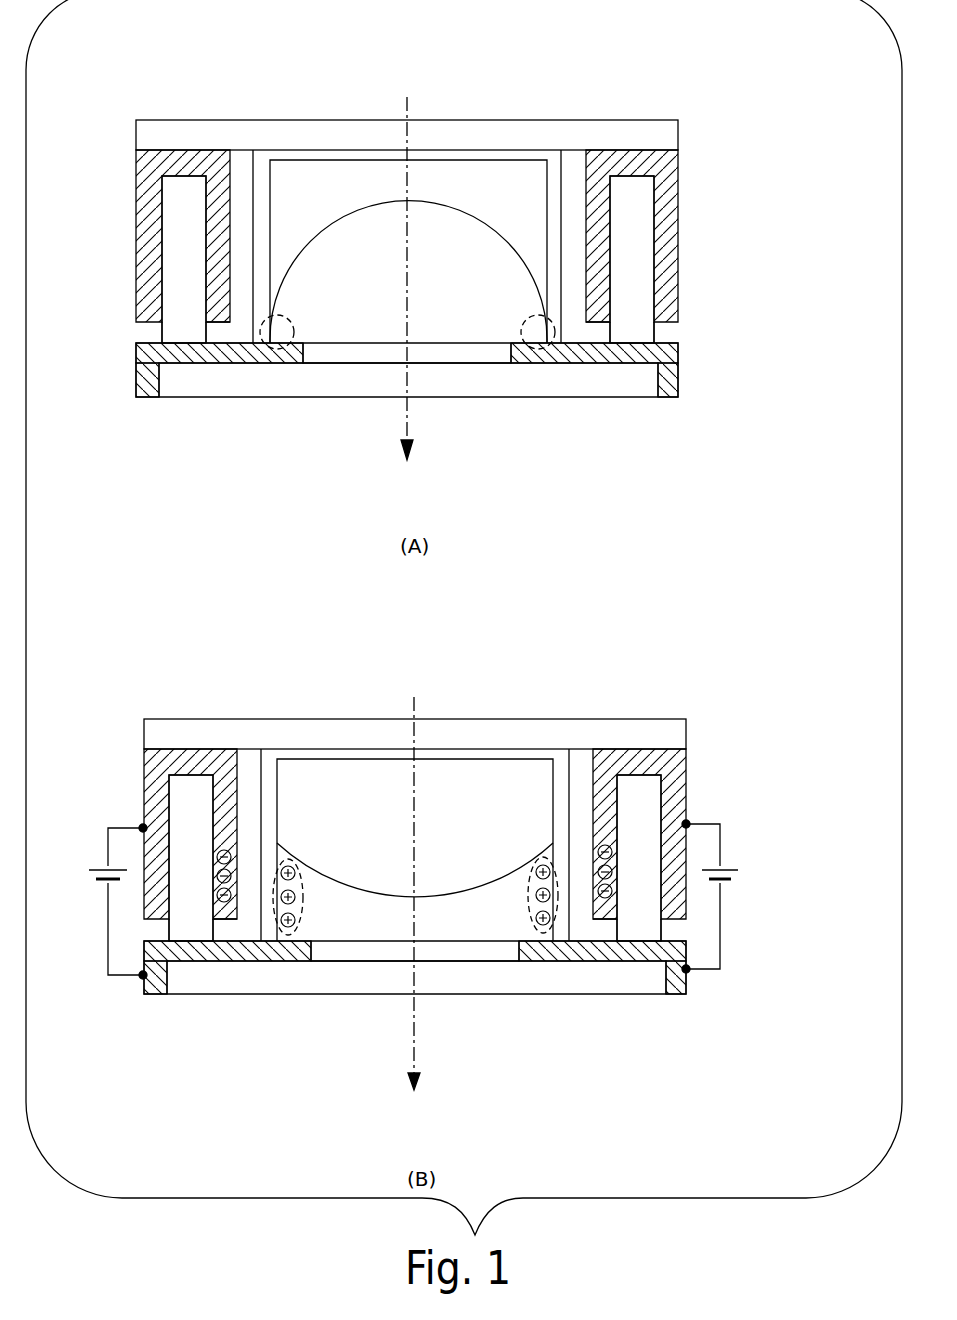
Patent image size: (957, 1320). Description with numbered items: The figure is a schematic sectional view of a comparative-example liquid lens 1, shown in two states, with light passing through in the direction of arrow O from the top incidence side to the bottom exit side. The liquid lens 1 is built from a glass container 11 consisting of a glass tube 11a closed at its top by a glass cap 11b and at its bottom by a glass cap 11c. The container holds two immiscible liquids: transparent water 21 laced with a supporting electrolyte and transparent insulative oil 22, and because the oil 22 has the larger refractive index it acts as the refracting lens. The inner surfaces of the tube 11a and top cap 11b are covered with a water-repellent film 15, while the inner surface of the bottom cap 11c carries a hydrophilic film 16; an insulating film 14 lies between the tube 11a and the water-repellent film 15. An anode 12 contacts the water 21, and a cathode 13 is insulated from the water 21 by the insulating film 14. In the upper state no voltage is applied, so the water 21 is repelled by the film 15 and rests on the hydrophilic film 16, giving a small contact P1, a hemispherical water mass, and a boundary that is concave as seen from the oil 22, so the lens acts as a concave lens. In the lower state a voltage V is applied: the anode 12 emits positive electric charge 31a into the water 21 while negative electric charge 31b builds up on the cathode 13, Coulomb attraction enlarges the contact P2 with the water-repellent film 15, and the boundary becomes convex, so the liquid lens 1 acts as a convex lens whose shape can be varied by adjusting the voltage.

The liquid lens 1 is at (651, 73).
The glass container 11 is at (803, 122).
The glass tube 11a is at (636, 207).
The glass cap 11b is at (665, 132).
The glass cap 11c is at (637, 375).
The anode 12 is at (152, 390).
The cathode 13 is at (136, 198).
The insulating film 14 is at (220, 330).
The water-repellent film 15 is at (258, 292).
The hydrophilic film 16 is at (455, 350).
The water 21 is at (291, 192).
The oil 22 is at (465, 233).
The arrow O is at (411, 578).
The contact P1 is at (283, 348).
The contact P2 is at (300, 935).
The positive electric charge 31a is at (300, 925).
The negative electric charge 31b is at (222, 847).
The voltage V is at (413, 899).